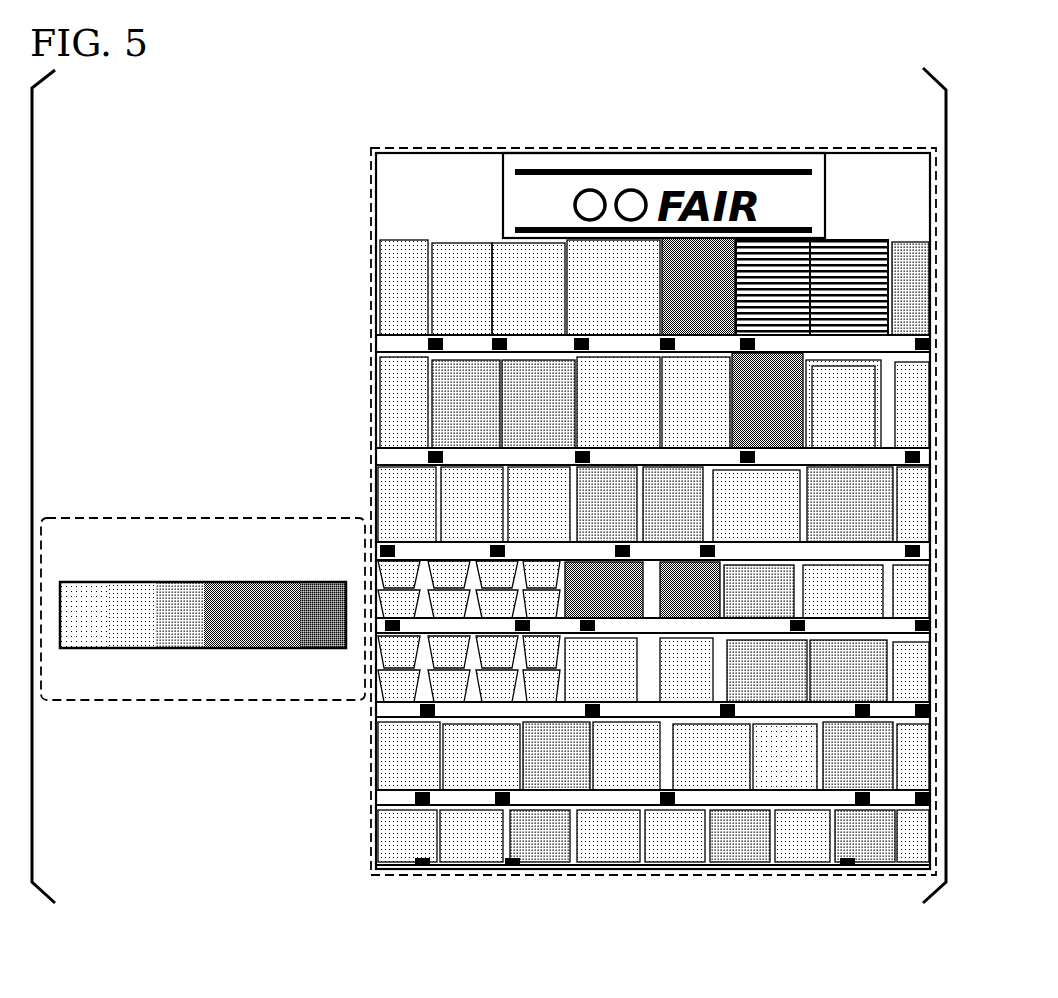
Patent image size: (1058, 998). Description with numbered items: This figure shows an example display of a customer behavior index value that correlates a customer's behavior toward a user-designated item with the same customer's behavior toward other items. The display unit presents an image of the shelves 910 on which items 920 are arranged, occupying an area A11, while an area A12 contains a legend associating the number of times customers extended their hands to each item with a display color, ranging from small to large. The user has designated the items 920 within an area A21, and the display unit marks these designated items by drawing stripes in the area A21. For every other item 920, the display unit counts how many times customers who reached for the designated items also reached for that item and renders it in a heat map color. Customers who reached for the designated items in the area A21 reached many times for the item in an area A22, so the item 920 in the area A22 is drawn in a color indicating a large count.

The shelves 910 is at (445, 210).
The items 920 is at (397, 404).
The area A11 is at (371, 822).
The area A12 is at (178, 517).
The area A21 is at (851, 236).
The area A22 is at (705, 236).